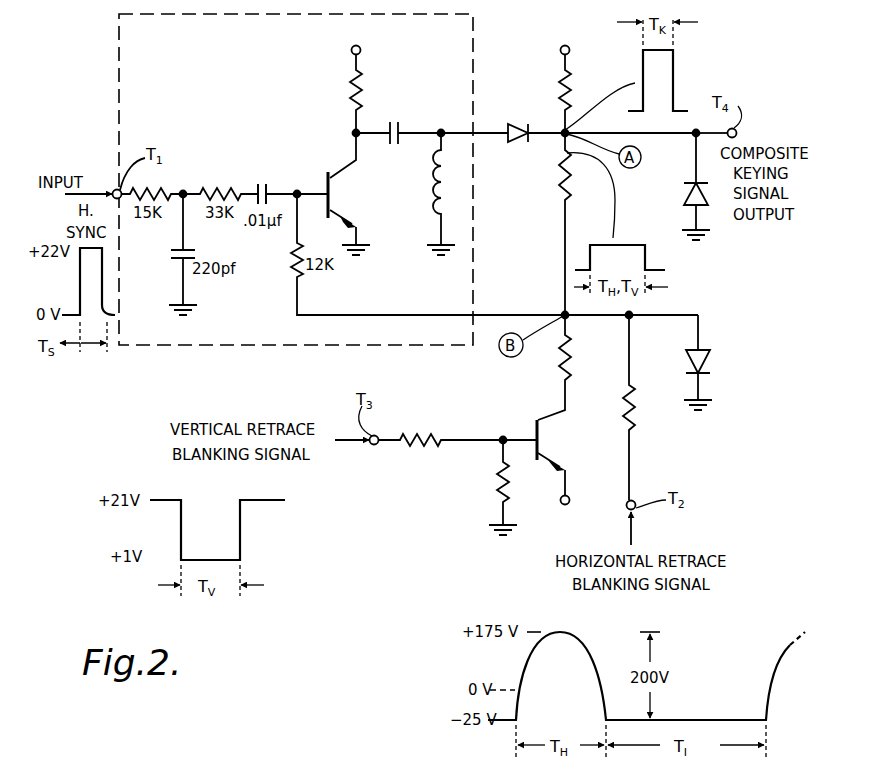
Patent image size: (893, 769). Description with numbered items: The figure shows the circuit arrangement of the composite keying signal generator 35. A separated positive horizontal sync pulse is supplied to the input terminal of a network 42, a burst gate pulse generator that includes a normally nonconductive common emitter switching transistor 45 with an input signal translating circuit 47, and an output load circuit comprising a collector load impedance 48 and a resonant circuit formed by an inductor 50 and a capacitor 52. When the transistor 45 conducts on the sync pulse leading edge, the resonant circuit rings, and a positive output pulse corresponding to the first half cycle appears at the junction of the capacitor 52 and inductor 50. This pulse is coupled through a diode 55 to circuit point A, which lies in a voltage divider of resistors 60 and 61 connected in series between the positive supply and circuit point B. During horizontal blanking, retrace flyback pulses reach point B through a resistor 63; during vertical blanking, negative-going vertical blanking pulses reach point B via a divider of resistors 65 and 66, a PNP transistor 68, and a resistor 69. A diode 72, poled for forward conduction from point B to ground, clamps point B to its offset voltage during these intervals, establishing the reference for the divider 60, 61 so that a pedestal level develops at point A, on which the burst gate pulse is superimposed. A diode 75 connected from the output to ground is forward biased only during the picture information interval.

The composite keying signal generator 35 is at (381, 610).
The network 42 is at (117, 85).
The switching transistor 45 is at (366, 194).
The input signal translating circuit 47 is at (256, 174).
The collector load impedance 48 is at (350, 87).
The inductor 50 is at (444, 179).
The capacitor 52 is at (393, 120).
The diode 55 is at (518, 140).
The resistor 60 is at (558, 80).
The resistor 61 is at (571, 188).
The resistor 63 is at (622, 406).
The resistor 65 is at (410, 433).
The resistor 66 is at (500, 482).
The PNP transistor 68 is at (579, 451).
The resistor 69 is at (562, 379).
The diode 72 is at (713, 367).
The diode 75 is at (684, 186).